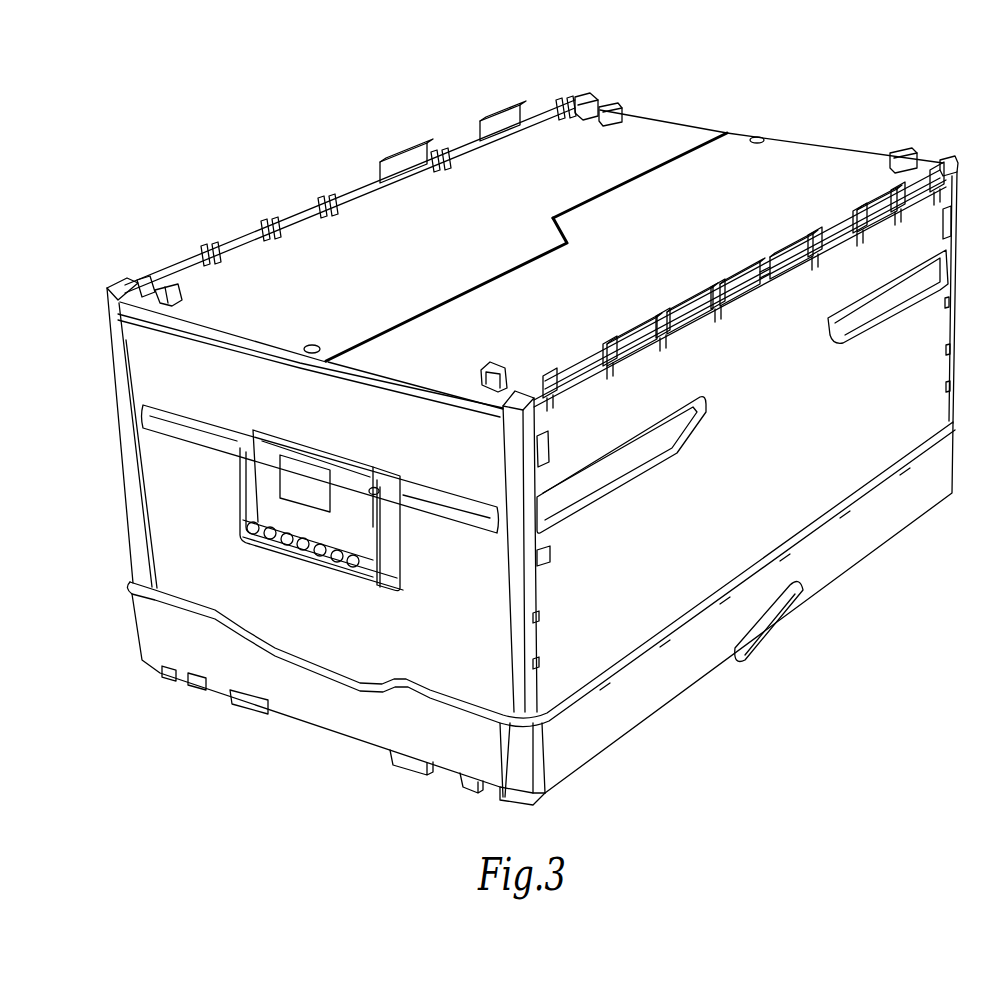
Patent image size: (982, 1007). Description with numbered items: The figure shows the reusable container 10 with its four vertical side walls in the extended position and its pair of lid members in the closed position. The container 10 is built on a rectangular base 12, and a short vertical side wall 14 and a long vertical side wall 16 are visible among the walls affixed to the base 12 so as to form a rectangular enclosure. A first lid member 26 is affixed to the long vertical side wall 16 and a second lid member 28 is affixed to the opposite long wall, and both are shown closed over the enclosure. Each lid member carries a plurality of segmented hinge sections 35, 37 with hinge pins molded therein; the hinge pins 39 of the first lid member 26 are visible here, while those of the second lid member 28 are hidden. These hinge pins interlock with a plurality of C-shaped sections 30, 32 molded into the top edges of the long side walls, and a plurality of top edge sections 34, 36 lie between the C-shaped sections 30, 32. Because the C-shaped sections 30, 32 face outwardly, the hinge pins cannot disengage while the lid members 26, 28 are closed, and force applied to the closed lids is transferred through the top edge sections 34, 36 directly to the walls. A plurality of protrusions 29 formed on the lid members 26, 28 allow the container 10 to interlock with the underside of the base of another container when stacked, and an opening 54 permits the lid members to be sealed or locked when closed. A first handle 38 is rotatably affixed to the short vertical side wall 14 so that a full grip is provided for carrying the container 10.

The reusable container 10 is at (931, 55).
The rectangular base 12 is at (619, 722).
The short vertical side wall 14 is at (461, 617).
The long vertical side wall 16 is at (806, 452).
The first lid member 26 is at (636, 265).
The second lid member 28 is at (421, 255).
The protrusions 29 is at (613, 113).
The C-shaped sections 30 is at (600, 358).
The C-shaped sections 32 is at (167, 277).
The top edge sections 34 is at (792, 278).
The segmented hinge sections 35 is at (553, 376).
The top edge sections 36 is at (385, 163).
The segmented hinge sections 37 is at (262, 233).
The first handle 38 is at (303, 540).
The hinge pins 39 is at (583, 378).
The opening 54 is at (317, 346).